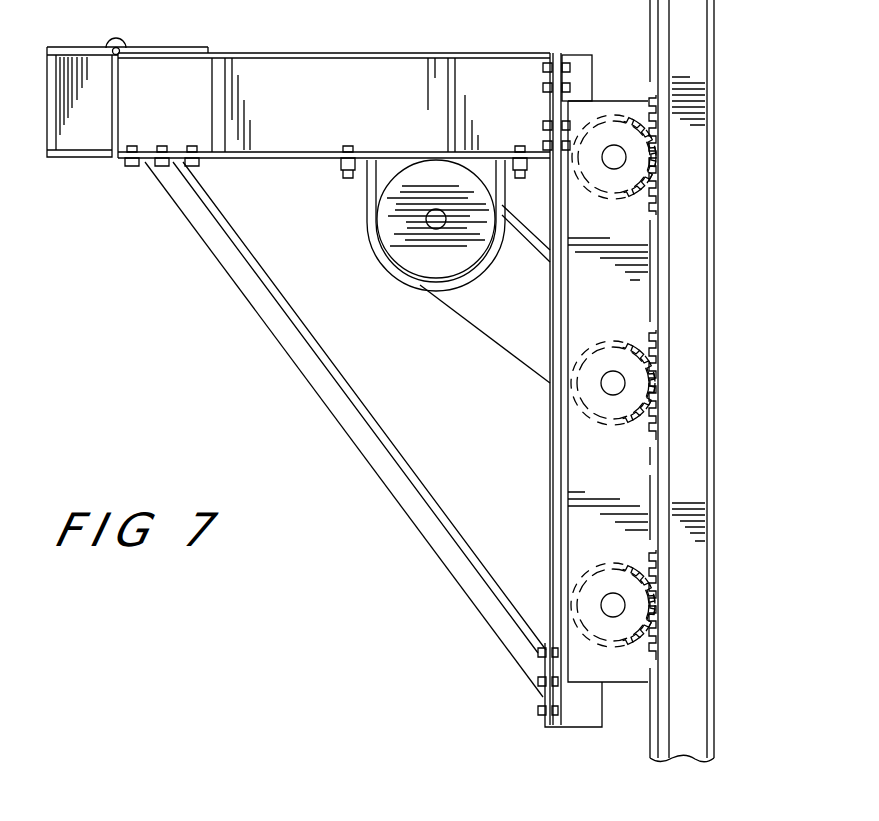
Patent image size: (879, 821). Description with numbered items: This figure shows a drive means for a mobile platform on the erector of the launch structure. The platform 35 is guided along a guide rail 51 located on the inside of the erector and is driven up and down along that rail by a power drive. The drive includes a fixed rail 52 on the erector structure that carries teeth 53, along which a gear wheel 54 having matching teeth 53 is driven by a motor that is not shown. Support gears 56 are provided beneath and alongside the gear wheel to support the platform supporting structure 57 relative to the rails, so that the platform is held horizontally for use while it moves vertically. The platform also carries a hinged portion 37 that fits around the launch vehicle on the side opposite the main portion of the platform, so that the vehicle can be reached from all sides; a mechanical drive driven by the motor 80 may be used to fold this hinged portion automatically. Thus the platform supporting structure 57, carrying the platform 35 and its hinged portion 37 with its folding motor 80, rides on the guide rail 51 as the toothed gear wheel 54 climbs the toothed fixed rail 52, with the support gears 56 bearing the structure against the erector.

The platform 35 is at (421, 52).
The hinged portion 37 is at (85, 50).
The guide rail 51 is at (716, 212).
The fixed rail 52 is at (660, 502).
The teeth 53 is at (650, 420).
The gear wheel 54 is at (617, 178).
The support gear 56 is at (596, 388).
The platform supporting structure 57 is at (463, 545).
The motor 80 is at (408, 256).